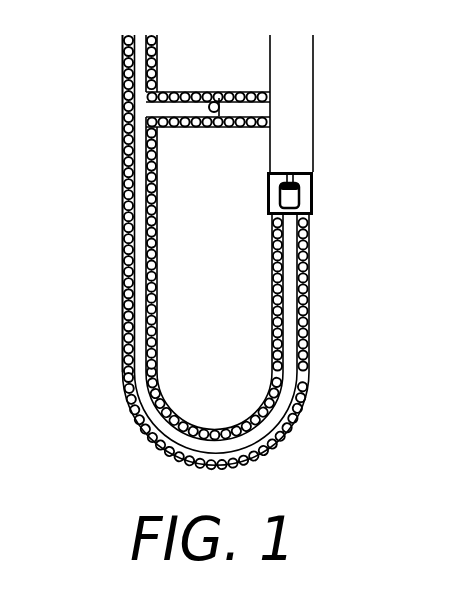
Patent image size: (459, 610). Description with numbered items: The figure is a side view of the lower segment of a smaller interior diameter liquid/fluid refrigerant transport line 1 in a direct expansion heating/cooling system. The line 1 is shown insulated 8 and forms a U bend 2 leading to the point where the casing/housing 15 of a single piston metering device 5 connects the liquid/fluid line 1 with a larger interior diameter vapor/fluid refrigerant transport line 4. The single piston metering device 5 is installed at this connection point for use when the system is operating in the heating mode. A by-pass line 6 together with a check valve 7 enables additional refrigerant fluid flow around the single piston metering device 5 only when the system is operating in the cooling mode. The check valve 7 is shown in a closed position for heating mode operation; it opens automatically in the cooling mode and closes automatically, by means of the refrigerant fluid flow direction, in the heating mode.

The liquid/fluid refrigerant transport line 1 is at (138, 75).
The U bend 2 is at (275, 427).
The vapor/fluid refrigerant transport line 4 is at (298, 60).
The single piston metering device 5 is at (300, 194).
The by-pass line 6 is at (164, 118).
The check valve 7 is at (223, 99).
The insulation 8 is at (127, 292).
The casing/housing 15 is at (267, 201).